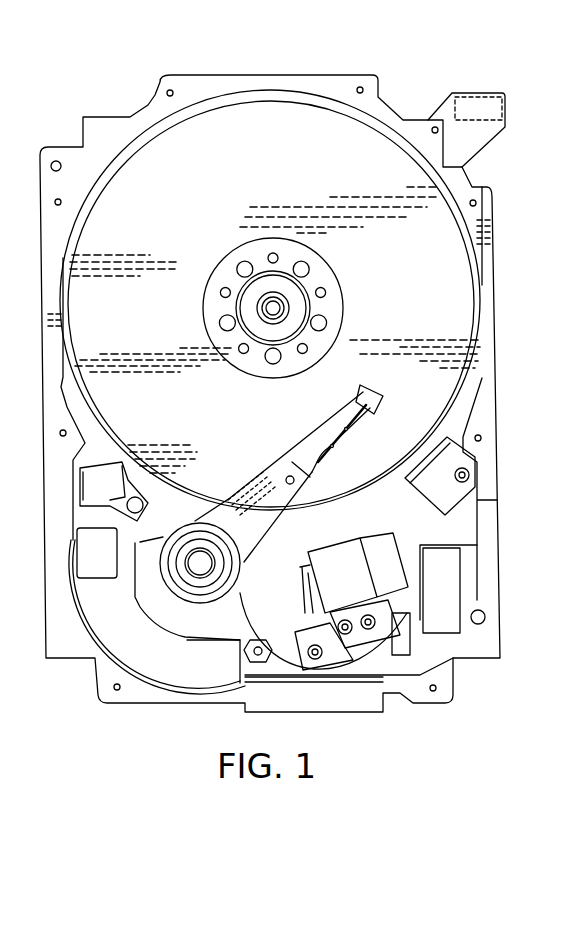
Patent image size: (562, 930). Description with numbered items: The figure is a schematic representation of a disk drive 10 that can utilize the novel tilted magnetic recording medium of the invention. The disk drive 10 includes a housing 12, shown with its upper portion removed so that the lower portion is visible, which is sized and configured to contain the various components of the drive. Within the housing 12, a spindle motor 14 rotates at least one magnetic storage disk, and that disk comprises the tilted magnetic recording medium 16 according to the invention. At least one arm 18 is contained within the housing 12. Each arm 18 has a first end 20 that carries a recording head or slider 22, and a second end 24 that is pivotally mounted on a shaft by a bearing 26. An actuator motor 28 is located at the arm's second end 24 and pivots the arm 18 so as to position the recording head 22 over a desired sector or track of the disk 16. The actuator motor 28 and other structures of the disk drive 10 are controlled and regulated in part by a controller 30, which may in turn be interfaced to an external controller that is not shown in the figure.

The disk drive 10 is at (72, 112).
The housing 12 is at (347, 80).
The spindle motor 14 is at (270, 308).
The tilted magnetic recording medium 16 is at (218, 186).
The arm 18 is at (268, 488).
The first end 20 is at (335, 417).
The recording head 22 is at (377, 397).
The second end 24 is at (212, 525).
The bearing 26 is at (192, 557).
The actuator motor 28 is at (157, 617).
The controller 30 is at (452, 580).